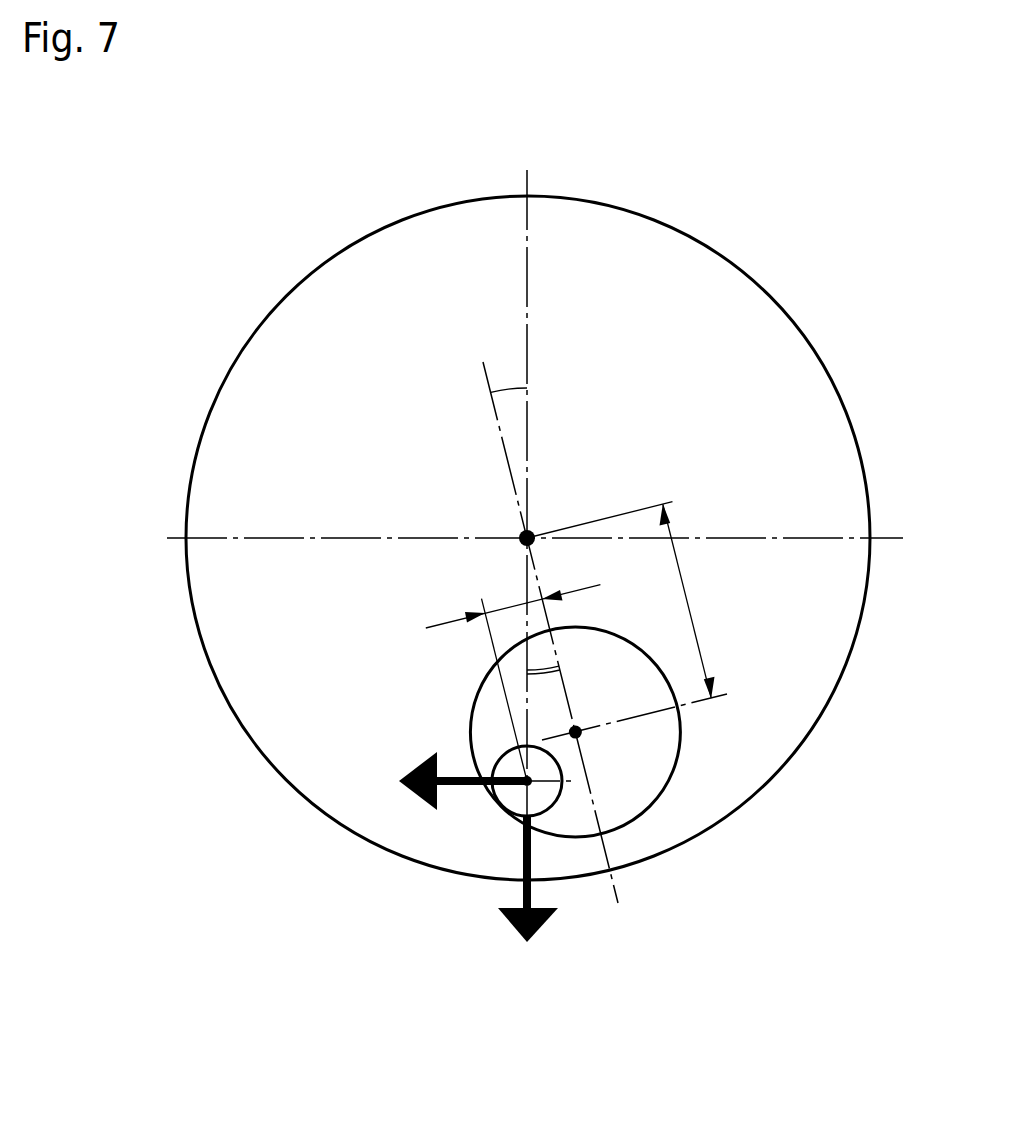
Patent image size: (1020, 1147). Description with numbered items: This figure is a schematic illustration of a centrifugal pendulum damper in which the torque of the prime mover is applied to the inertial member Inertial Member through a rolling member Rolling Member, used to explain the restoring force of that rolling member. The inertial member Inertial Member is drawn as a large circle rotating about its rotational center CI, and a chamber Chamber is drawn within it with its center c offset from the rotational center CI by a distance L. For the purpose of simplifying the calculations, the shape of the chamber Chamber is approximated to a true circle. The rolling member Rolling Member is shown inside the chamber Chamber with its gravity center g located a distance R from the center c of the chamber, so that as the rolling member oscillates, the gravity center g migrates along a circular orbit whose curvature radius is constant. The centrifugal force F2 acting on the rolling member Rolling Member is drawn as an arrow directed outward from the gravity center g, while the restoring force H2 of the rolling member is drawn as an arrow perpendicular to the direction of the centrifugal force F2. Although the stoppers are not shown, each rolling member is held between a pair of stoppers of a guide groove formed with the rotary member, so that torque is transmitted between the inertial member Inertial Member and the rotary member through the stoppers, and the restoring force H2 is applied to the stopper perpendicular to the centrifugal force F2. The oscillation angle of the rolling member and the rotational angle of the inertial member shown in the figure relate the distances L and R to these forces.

The inertial member Inertial Member is at (337, 300).
The rotational center of the inertial member CI is at (520, 534).
The chamber Chamber is at (658, 750).
The center of the chamber c is at (577, 735).
The rolling member Rolling Member is at (543, 793).
The gravity center of the rolling member g is at (523, 787).
The distance between rotational center of inertial member and center of chamber L is at (621, 600).
The distance between center of chamber and gravity center of rolling member R is at (511, 608).
The restoring force of the rolling member H2 is at (447, 781).
The centrifugal force acting on the rolling member F2 is at (528, 894).